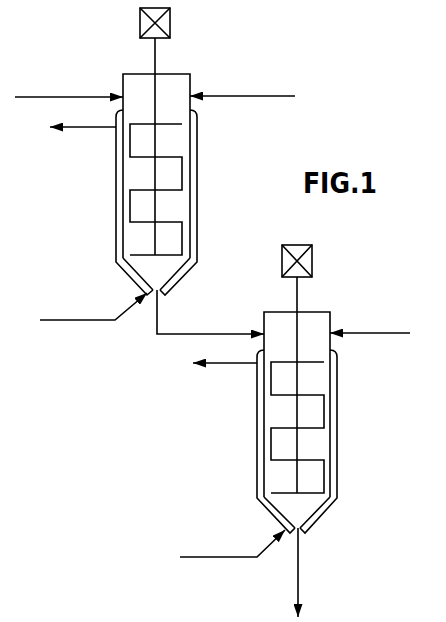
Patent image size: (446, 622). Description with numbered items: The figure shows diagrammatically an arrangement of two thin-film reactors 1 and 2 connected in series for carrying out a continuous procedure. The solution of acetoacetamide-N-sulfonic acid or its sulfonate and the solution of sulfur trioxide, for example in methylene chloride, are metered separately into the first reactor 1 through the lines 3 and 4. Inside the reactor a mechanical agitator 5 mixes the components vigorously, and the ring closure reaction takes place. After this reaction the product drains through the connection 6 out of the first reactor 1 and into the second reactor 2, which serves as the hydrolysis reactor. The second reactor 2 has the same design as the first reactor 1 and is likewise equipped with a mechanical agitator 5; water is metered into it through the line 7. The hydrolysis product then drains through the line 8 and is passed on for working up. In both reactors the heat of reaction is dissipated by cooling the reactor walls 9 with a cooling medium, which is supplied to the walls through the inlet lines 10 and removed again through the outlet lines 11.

The first thin-film reactor 1 is at (107, 182).
The second thin-film reactor 2 is at (250, 435).
The line 3 is at (66, 96).
The line 4 is at (252, 97).
The mechanical agitator 5 is at (143, 226).
The connection 6 is at (157, 336).
The line 7 is at (390, 335).
The line 8 is at (300, 570).
The reactor walls 9 is at (198, 172).
The inlet lines 10 is at (83, 321).
The outlet lines 11 is at (88, 128).